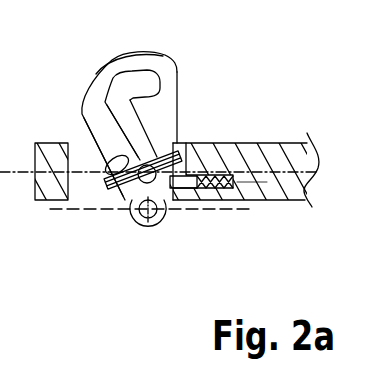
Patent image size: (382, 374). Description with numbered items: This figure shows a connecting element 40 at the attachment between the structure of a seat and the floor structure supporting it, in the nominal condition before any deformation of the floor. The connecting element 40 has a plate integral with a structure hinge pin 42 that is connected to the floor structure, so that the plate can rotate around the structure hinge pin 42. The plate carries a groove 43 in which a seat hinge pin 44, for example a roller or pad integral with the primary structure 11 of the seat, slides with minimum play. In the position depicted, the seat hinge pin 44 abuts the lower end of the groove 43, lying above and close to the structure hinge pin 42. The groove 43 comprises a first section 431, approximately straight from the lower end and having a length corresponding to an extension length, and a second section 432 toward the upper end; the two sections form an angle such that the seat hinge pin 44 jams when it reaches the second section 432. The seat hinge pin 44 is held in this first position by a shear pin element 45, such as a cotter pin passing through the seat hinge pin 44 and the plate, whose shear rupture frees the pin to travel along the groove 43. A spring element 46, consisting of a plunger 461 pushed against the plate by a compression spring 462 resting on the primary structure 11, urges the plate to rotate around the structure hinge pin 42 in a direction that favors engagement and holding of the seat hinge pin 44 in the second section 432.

The primary structure of the seat 11 is at (268, 148).
The connecting element 40 is at (87, 230).
The structure hinge pin 42 is at (143, 215).
The groove 43 is at (113, 105).
The first section 431 is at (122, 110).
The second section 432 is at (150, 82).
The seat hinge pin 44 is at (170, 114).
The shear pin element 45 is at (140, 196).
The spring element 46 is at (214, 172).
The plunger 461 is at (180, 189).
The compression spring 462 is at (218, 190).